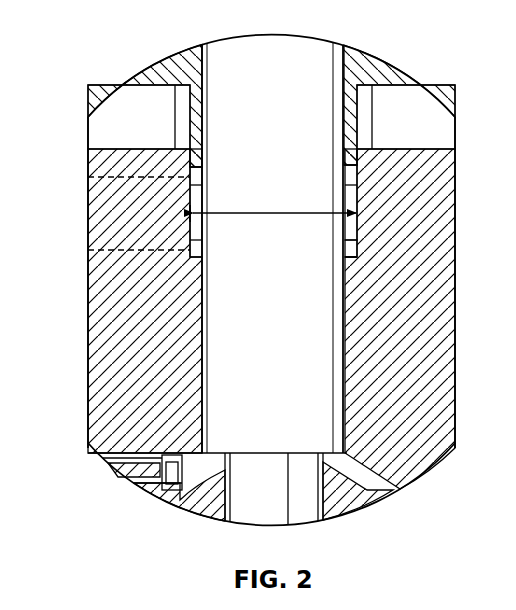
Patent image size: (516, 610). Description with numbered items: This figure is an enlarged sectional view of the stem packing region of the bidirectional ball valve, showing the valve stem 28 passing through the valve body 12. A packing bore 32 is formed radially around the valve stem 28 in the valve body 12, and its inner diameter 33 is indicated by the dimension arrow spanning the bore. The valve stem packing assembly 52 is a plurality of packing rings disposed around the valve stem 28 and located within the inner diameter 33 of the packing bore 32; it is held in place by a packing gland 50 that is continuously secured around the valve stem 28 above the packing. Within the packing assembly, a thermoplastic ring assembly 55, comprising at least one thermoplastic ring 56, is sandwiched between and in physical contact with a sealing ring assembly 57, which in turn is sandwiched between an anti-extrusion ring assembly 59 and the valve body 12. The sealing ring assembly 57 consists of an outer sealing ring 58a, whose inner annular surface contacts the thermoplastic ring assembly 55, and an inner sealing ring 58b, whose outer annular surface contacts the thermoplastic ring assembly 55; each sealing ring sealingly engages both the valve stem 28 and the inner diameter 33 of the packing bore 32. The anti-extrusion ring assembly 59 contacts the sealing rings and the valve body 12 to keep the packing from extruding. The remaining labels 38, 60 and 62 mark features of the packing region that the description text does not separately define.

The valve body 12 is at (102, 303).
The valve stem 28 is at (238, 48).
The packing bore 32 is at (192, 158).
The inner diameter of the packing bore 33 is at (275, 215).
The sealing surface 38 is at (360, 231).
The packing gland 50 is at (378, 68).
The valve stem packing assembly 52 is at (189, 213).
The thermoplastic ring assembly 55 is at (203, 196).
The thermoplastic ring 56 is at (372, 205).
The sealing ring assembly 57 is at (80, 177).
The outer sealing ring 58a is at (357, 183).
The inner sealing ring 58b is at (358, 252).
The anti-extrusion ring assembly 59 is at (200, 160).
The retaining groove 60 is at (358, 148).
The seal lip end 62 is at (353, 266).